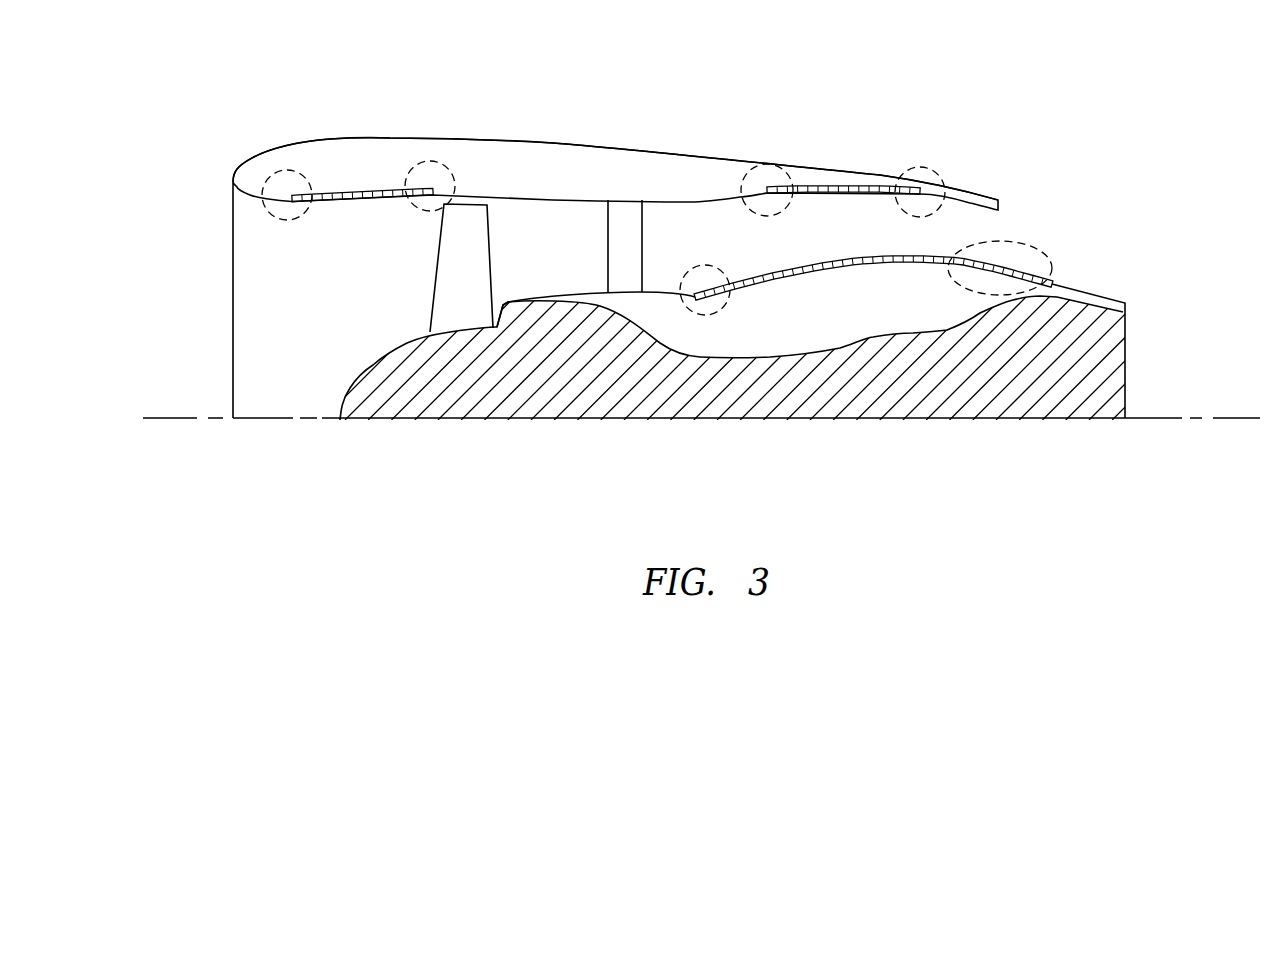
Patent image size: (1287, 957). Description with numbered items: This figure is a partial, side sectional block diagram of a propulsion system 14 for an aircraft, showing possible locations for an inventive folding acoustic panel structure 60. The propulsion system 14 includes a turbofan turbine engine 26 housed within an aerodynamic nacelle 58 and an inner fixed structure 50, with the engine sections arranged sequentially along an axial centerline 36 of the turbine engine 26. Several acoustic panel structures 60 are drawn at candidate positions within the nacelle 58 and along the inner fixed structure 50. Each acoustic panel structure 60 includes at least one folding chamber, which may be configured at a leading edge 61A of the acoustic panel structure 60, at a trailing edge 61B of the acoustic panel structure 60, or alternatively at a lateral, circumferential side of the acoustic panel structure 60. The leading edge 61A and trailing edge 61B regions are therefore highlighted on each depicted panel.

The propulsion system 14 is at (256, 88).
The turbofan turbine engine 26 is at (457, 430).
The axial centerline 36 is at (183, 420).
The inner fixed structure 50 is at (1083, 288).
The aerodynamic nacelle 58 is at (387, 142).
The folding acoustic panel structure 60 is at (357, 205).
The leading edge 61A is at (277, 220).
The trailing edge 61B is at (423, 210).